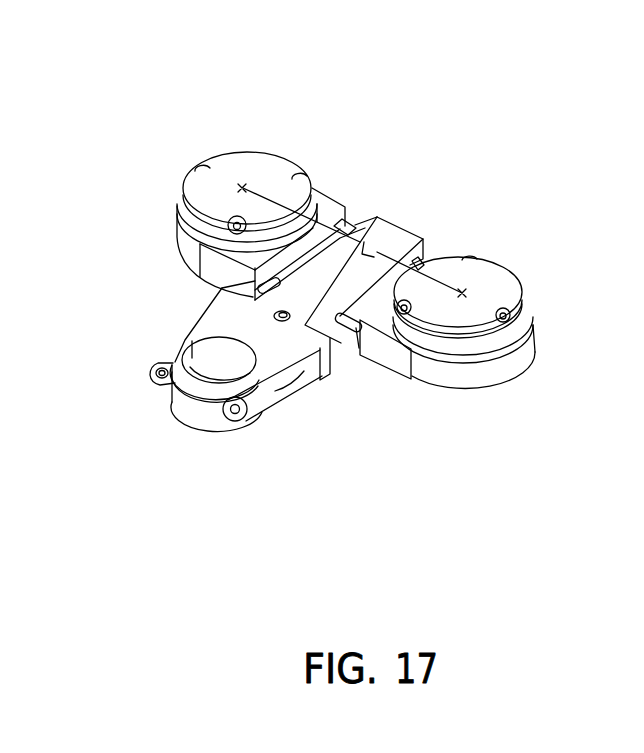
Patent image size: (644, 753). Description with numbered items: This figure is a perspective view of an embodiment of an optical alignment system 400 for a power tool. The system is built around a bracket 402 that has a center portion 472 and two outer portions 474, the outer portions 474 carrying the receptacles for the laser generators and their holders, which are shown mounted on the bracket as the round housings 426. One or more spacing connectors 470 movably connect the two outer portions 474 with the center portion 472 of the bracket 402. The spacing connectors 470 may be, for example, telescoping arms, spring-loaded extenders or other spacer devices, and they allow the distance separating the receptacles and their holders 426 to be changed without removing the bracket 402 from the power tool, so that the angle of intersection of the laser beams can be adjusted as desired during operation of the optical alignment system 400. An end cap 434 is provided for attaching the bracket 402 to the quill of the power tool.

The optical alignment system 400 is at (455, 85).
The bracket 402 is at (307, 380).
The housing 426 is at (248, 167).
The end cap 434 is at (192, 402).
The spacing connector 470 is at (348, 226).
The center portion 472 is at (400, 243).
The outer portion 474 is at (187, 253).